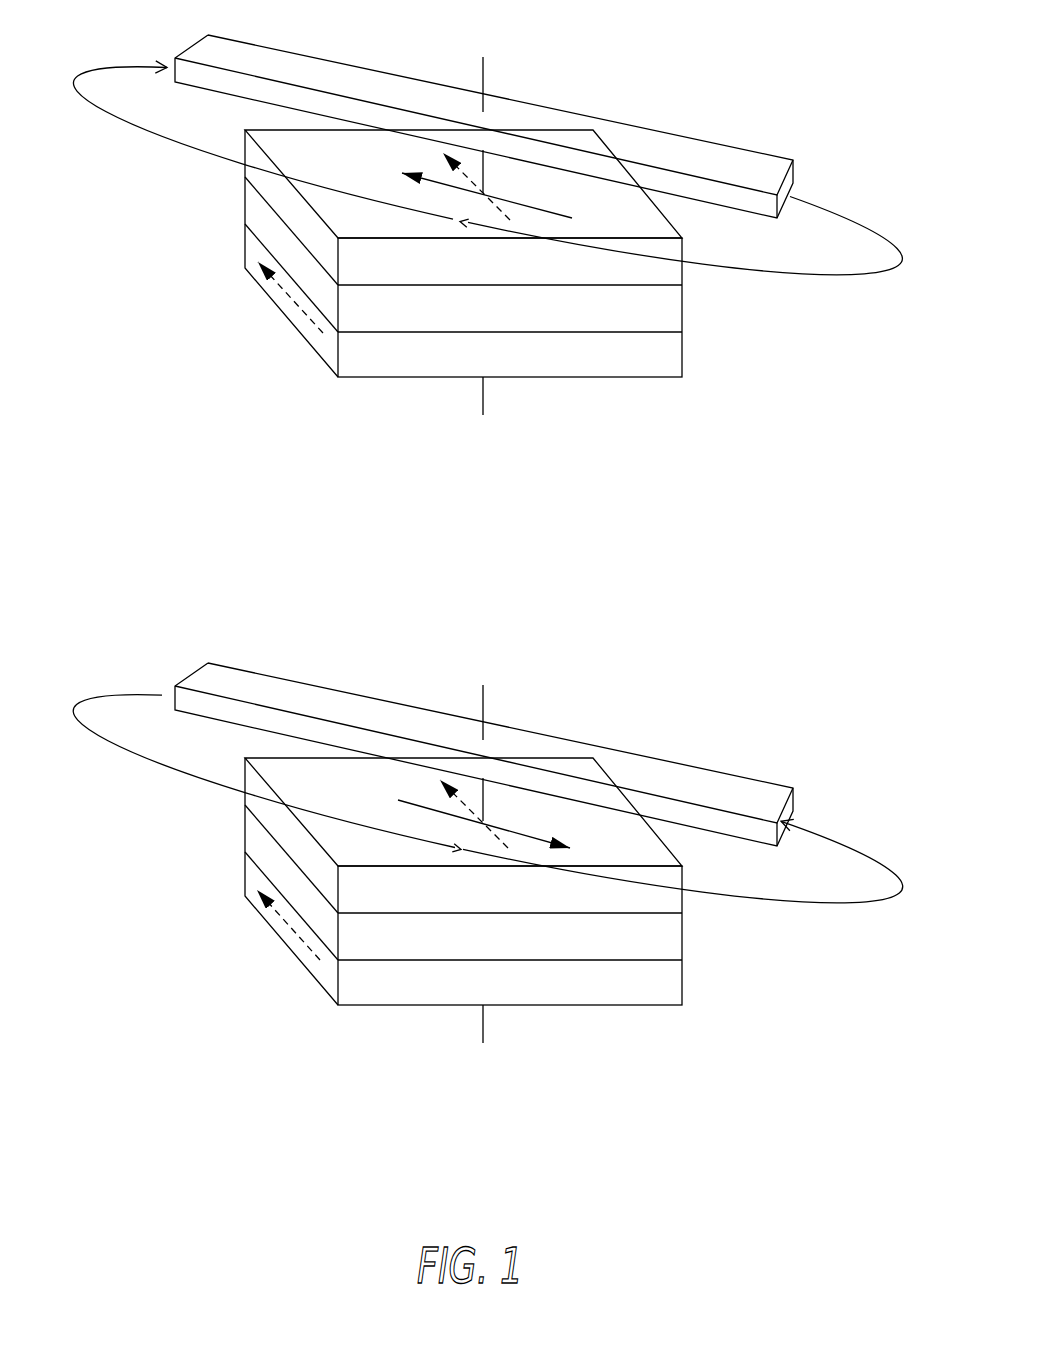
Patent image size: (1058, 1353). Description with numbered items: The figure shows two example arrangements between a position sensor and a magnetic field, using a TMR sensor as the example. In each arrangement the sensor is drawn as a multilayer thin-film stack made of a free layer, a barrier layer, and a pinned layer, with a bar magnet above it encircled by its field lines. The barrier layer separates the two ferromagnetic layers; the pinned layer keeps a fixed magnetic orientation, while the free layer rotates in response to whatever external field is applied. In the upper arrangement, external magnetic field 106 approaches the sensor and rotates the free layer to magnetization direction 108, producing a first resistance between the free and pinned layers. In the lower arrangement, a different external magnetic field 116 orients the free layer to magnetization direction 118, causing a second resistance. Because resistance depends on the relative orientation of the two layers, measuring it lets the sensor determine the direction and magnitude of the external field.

The external magnetic field 106 is at (732, 146).
The magnetization direction 108 is at (513, 202).
The external magnetic field 116 is at (742, 778).
The magnetization direction 118 is at (510, 825).